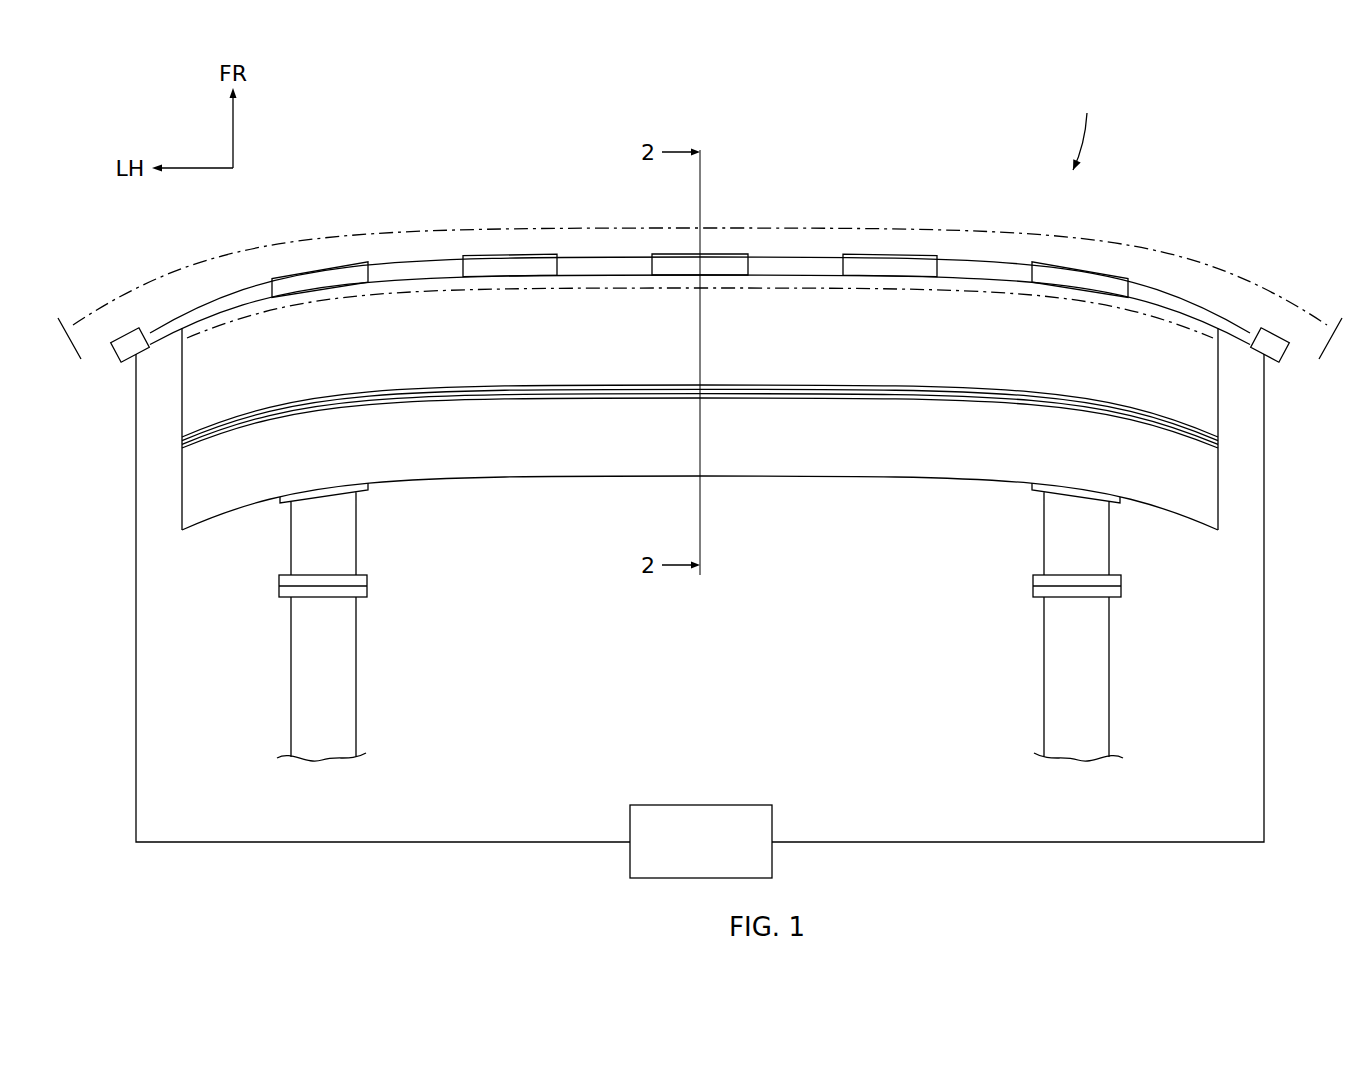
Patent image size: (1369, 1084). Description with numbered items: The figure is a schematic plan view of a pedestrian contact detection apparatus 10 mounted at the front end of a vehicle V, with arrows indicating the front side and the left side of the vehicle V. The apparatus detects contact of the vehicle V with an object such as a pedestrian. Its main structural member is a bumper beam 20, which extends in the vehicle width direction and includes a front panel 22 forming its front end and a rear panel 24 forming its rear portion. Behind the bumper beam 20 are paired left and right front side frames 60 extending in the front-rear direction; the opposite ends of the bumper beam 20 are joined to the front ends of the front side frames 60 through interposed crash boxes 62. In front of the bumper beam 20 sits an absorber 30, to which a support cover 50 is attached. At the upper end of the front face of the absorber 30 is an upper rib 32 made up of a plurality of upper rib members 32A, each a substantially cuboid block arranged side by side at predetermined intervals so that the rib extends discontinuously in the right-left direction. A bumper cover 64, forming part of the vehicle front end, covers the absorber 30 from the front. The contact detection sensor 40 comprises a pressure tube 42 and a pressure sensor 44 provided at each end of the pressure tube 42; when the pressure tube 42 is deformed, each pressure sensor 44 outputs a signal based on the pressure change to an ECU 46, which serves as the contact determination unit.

The pedestrian contact detection apparatus 10 is at (1017, 210).
The vehicle V is at (1084, 129).
The bumper beam 20 is at (700, 466).
The front panel 22 is at (835, 383).
The rear panel 24 is at (877, 480).
The absorber 30 is at (533, 335).
The upper rib 32 is at (717, 230).
The upper rib members 32A is at (337, 262).
The contact detection sensor 40 is at (701, 528).
The pressure tube 42 is at (158, 326).
The pressure sensor 44 is at (123, 367).
The ECU 46 is at (704, 805).
The support cover 50 is at (440, 325).
The front side frames 60 is at (357, 690).
The crash boxes 62 is at (357, 538).
The bumper cover 64 is at (967, 233).